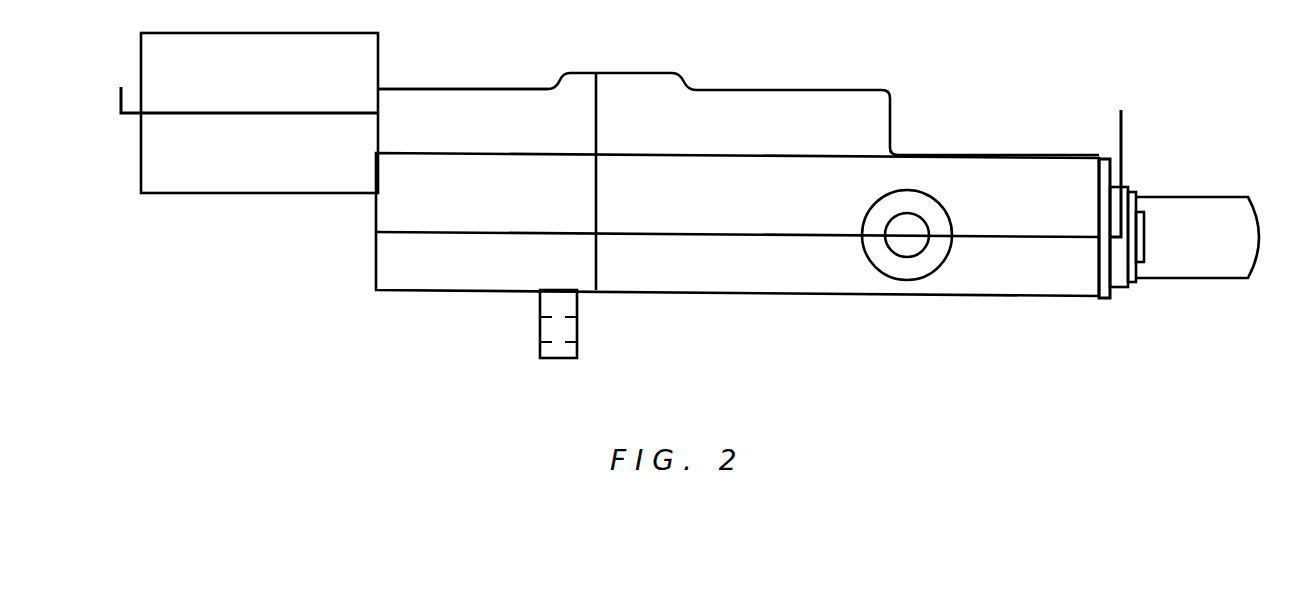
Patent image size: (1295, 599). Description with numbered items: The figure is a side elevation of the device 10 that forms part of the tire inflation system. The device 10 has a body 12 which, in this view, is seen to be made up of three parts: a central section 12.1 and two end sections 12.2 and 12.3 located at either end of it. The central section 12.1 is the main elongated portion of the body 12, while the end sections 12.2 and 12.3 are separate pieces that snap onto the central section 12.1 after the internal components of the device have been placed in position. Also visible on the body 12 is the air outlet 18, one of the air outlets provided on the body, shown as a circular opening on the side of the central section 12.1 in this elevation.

The device 10 is at (447, 338).
The body 12 is at (744, 86).
The central section 12.1 is at (943, 156).
The end section 12.2 is at (1108, 298).
The end section 12.3 is at (441, 89).
The air outlet 18 is at (910, 281).